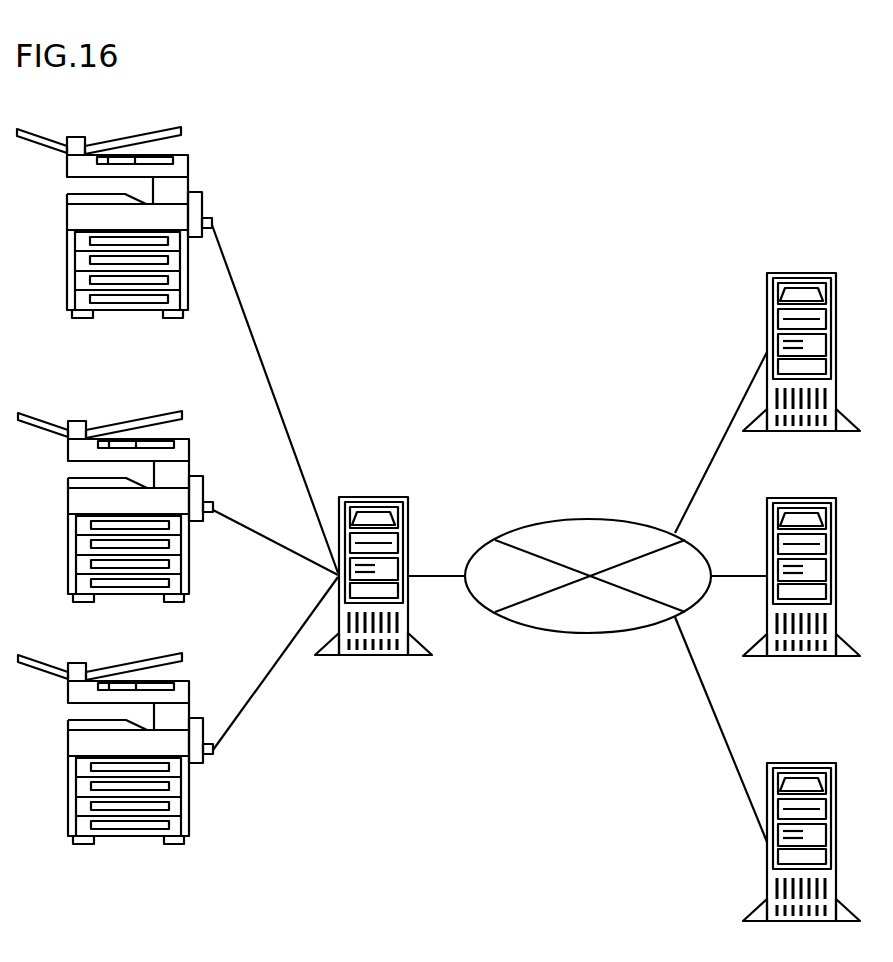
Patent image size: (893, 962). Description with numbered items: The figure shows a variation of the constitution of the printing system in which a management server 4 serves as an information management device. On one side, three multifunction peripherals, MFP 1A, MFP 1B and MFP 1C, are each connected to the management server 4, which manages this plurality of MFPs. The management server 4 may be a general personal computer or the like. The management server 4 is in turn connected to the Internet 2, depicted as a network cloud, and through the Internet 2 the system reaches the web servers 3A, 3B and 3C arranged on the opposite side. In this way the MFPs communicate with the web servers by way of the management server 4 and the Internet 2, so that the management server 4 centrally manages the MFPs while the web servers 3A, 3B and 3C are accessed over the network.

The MFP 1A is at (133, 132).
The MFP 1B is at (134, 417).
The MFP 1C is at (134, 658).
The Internet 2 is at (589, 520).
The web server 3A is at (812, 273).
The web server 3B is at (812, 498).
The web server 3C is at (812, 763).
The management server 4 is at (388, 497).